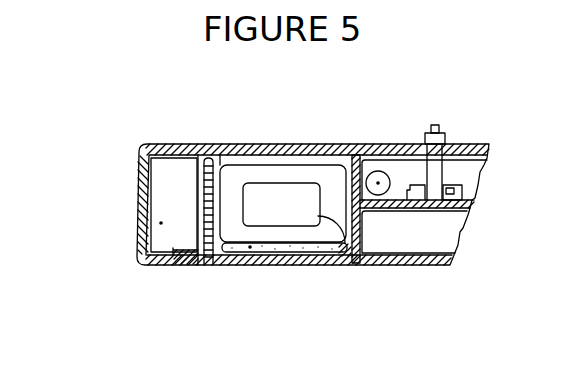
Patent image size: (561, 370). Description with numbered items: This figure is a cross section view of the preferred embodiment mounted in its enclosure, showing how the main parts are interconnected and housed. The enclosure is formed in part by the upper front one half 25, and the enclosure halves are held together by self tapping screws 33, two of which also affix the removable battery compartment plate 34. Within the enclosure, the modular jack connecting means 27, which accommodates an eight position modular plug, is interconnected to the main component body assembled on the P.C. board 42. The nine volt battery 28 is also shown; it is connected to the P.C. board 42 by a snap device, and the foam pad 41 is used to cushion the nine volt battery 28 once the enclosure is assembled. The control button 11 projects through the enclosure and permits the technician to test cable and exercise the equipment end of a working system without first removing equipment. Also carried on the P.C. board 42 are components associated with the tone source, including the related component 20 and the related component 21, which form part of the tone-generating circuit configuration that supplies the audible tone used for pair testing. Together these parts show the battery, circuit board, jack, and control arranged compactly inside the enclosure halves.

The control button 11 is at (440, 121).
The tone source related component 20 is at (468, 208).
The tone source related component 21 is at (378, 182).
The upper front one half 25 is at (203, 138).
The modular jack connecting means 27 is at (161, 223).
The nine volt battery 28 is at (253, 155).
The self tapping screws 33 is at (200, 270).
The battery compartment plate 34 is at (281, 271).
The foam pad 41 is at (250, 247).
The P.C. board 42 is at (442, 217).